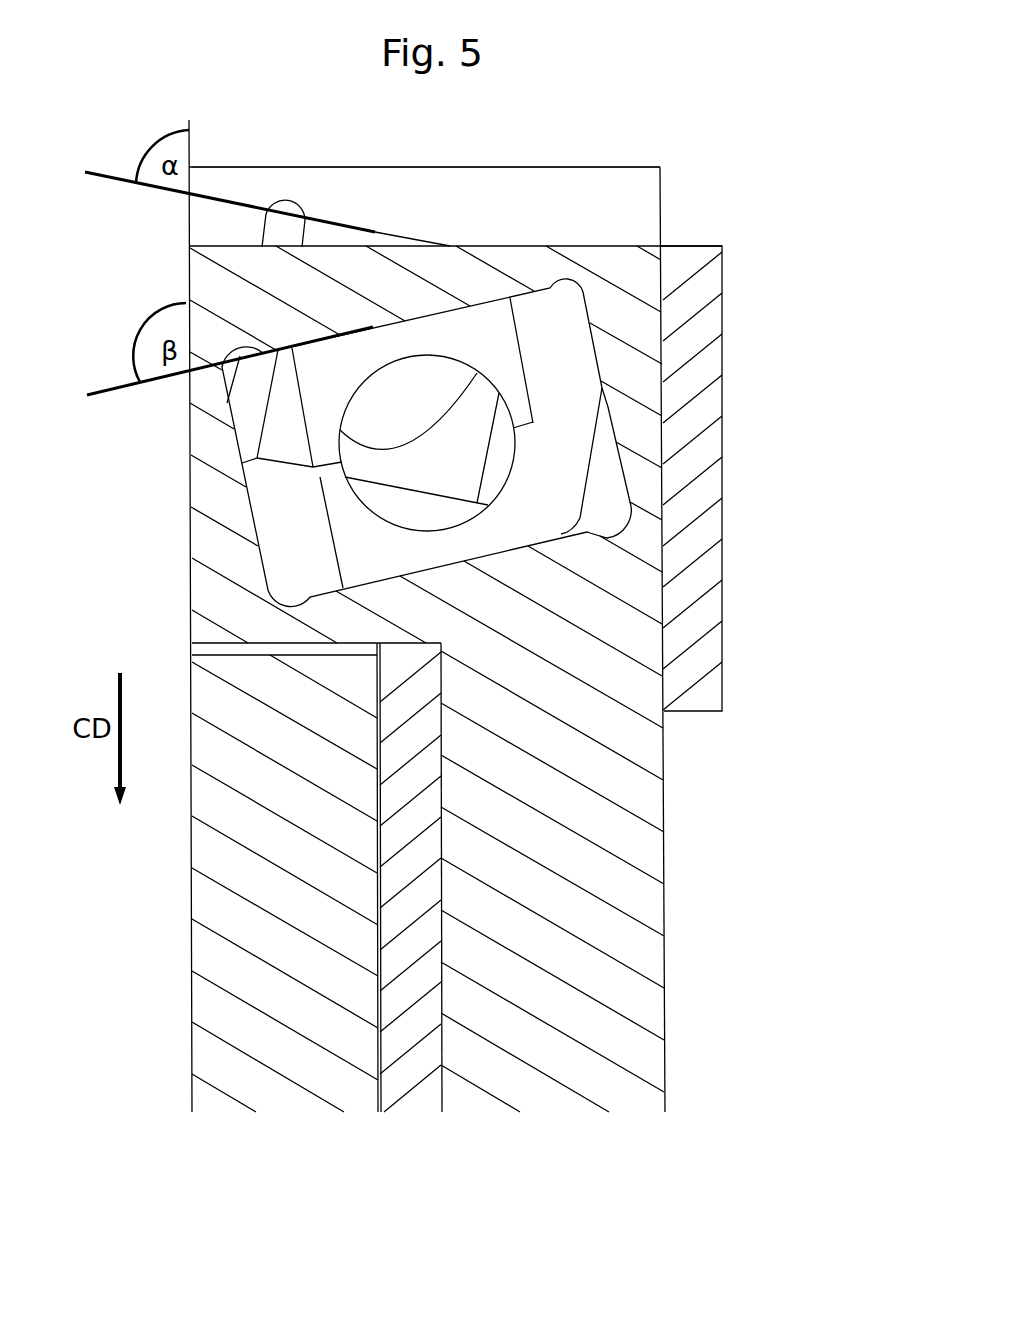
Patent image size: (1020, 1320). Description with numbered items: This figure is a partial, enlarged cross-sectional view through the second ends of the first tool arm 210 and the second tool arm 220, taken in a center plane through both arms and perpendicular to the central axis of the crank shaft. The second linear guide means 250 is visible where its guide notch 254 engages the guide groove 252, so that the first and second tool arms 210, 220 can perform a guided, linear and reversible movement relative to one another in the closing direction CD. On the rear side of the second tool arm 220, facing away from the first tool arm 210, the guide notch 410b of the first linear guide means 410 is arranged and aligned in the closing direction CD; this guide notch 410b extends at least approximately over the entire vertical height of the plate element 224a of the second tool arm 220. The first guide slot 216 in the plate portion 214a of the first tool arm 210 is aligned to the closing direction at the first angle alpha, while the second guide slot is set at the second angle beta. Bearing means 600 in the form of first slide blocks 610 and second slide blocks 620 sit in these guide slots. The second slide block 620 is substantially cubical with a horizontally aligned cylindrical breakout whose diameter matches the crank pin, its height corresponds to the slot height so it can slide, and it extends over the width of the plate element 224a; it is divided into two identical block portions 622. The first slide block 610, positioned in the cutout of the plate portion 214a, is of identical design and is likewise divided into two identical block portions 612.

The first tool arm 210 is at (193, 845).
The plate portion 214a is at (630, 195).
The first guide slot 216 is at (280, 228).
The second tool arm 220 is at (663, 921).
The plate element 224a is at (222, 537).
The second linear guide means 250 is at (480, 1153).
The guide groove 252 is at (380, 1102).
The guide notch 254 is at (418, 1100).
The first linear guide means 410 is at (768, 752).
The guide notch 410b is at (700, 665).
The bearing means 600 is at (688, 114).
The first slide block 610 is at (448, 149).
The block portion 612 is at (425, 463).
The second slide block 620 is at (553, 148).
The block portion 622 is at (527, 482).